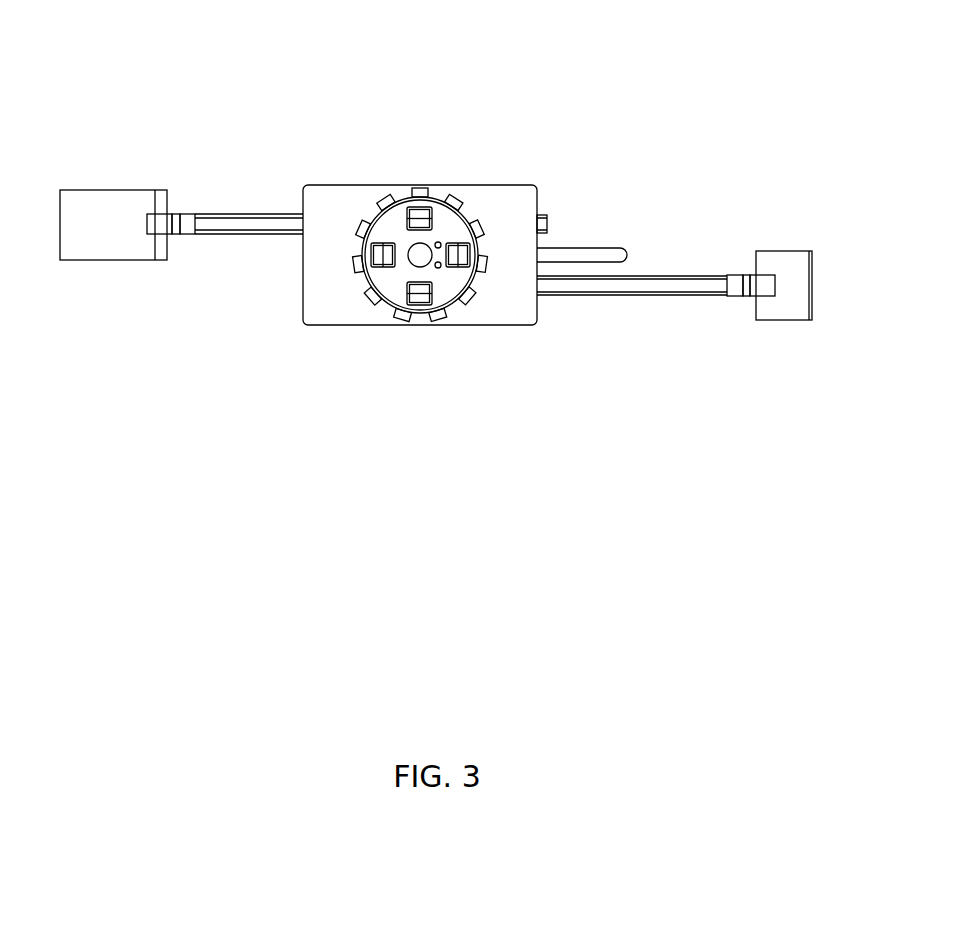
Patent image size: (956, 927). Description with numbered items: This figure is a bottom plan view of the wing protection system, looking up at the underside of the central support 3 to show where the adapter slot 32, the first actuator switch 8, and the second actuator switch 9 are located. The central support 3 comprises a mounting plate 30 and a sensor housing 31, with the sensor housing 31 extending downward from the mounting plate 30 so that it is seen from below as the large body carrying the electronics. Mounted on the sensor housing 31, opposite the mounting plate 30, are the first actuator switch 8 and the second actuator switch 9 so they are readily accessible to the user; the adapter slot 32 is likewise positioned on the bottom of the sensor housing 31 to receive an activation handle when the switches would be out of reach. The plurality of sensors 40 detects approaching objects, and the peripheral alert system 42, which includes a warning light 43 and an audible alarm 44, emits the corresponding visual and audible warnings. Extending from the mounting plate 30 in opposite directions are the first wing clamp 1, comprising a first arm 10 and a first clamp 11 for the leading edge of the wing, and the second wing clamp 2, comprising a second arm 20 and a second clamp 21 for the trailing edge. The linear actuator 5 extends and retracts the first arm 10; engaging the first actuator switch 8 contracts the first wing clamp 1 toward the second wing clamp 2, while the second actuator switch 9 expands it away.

The first wing clamp 1 is at (193, 42).
The second wing clamp 2 is at (693, 93).
The central support 3 is at (433, 496).
The linear actuator 5 is at (600, 252).
The first actuator switch 8 is at (437, 242).
The second actuator switch 9 is at (440, 269).
The first arm 10 is at (242, 220).
The first clamp 11 is at (103, 197).
The second arm 20 is at (780, 254).
The second clamp 21 is at (660, 291).
The mounting plate 30 is at (510, 190).
The sensor housing 31 is at (380, 283).
The adapter slot 32 is at (412, 238).
The plurality of sensors 40 is at (480, 231).
The peripheral alert system 42 is at (233, 262).
The warning light 43 is at (418, 300).
The audible alarm 44 is at (466, 254).